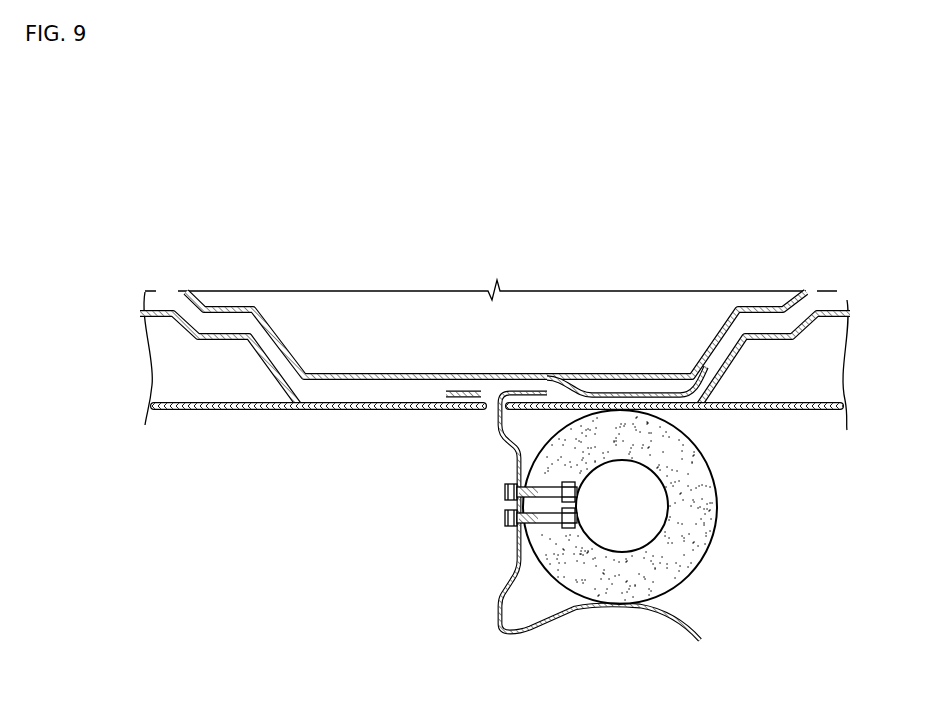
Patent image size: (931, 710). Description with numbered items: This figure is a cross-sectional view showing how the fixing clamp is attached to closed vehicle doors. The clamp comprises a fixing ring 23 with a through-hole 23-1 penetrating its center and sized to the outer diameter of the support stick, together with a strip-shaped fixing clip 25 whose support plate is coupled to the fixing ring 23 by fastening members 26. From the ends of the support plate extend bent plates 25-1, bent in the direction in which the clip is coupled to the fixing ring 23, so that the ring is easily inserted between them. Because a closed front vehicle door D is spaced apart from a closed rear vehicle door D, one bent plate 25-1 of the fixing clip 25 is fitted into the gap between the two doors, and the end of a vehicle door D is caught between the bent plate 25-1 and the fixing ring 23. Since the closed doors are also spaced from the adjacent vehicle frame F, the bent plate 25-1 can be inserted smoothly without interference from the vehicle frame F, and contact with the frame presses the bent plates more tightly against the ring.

The fixing ring 23 is at (702, 523).
The through-hole 23-1 is at (626, 530).
The fixing clip 25 is at (517, 457).
The bent plate 25-1 is at (628, 380).
The fastening member 26 is at (505, 518).
The vehicle door D is at (337, 428).
The vehicle frame F is at (775, 329).